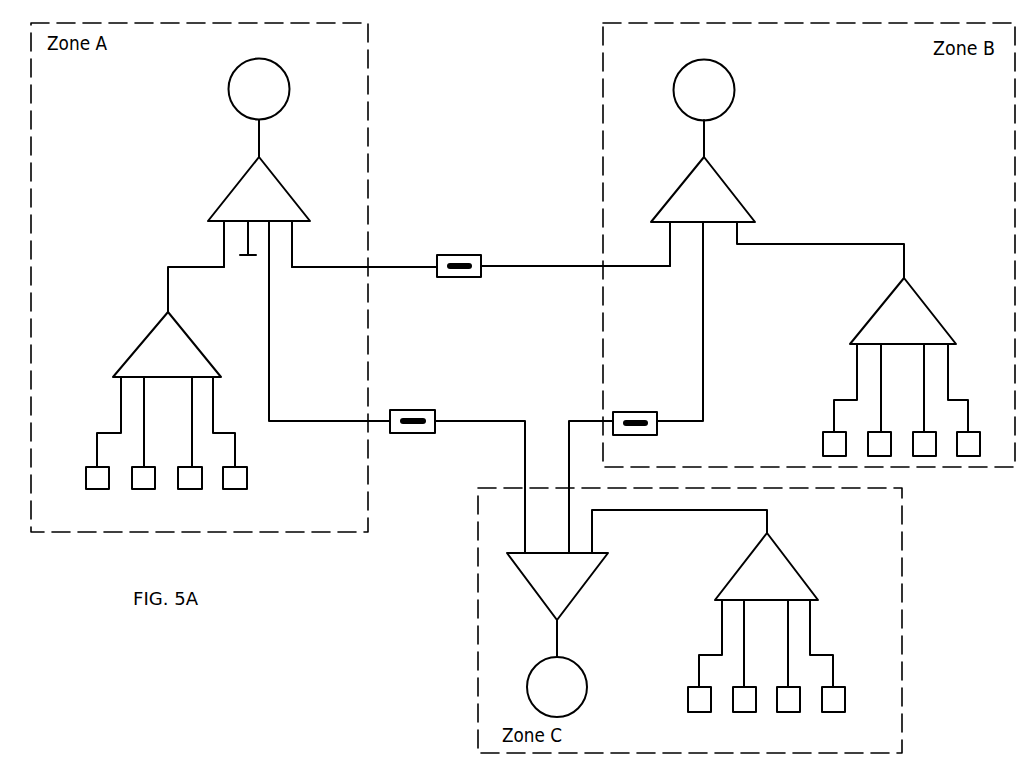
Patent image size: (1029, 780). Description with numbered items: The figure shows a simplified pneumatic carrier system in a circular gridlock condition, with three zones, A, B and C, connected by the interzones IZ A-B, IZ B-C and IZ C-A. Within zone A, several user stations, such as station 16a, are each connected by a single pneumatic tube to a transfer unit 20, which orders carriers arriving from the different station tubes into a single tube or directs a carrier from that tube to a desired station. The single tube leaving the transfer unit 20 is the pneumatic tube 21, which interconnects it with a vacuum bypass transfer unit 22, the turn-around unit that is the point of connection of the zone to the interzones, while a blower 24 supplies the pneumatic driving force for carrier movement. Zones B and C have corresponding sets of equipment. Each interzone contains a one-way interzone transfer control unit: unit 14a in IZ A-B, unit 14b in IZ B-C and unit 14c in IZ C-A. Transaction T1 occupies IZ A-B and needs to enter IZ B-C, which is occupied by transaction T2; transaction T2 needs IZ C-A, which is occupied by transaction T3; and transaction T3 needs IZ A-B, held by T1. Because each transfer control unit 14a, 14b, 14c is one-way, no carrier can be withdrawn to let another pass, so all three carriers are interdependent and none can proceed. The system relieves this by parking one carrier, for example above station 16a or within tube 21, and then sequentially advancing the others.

The blower 24 is at (259, 89).
The vacuum bypass transfer unit 22 is at (259, 189).
The pneumatic tube 21 is at (168, 266).
The transfer unit 20 is at (167, 344).
The user station 16a is at (96, 490).
The interzone transfer unit 14a is at (468, 260).
The interzone transfer unit 14b is at (666, 404).
The interzone transfer unit 14c is at (415, 424).
The transaction T1 is at (459, 278).
The transaction T2 is at (641, 412).
The transaction T3 is at (421, 410).
The interzone IZ A-B is at (338, 266).
The interzone IZ B-C is at (704, 328).
The interzone IZ C-A is at (317, 423).